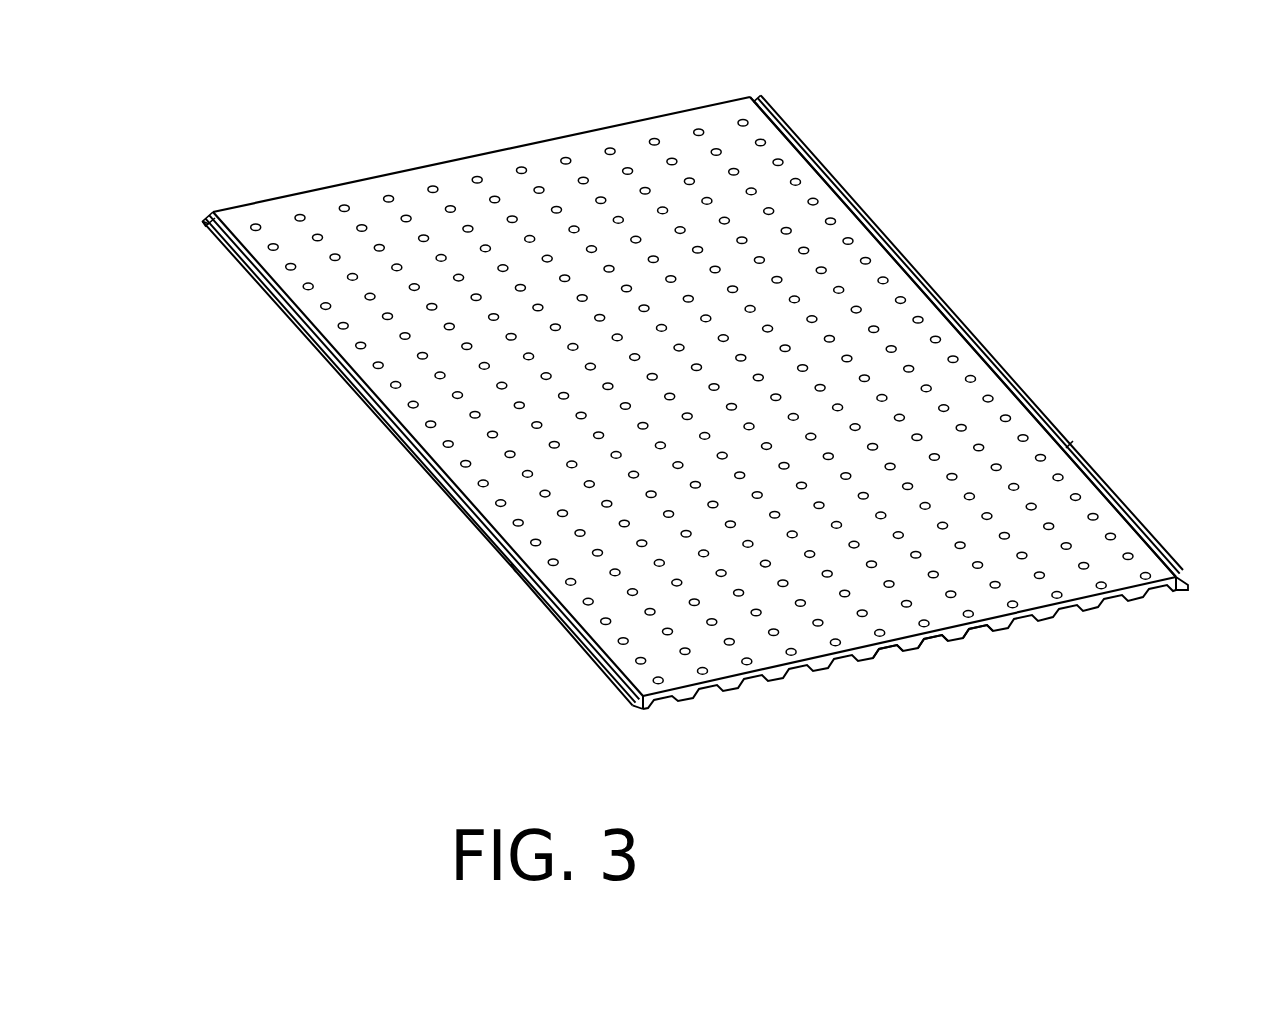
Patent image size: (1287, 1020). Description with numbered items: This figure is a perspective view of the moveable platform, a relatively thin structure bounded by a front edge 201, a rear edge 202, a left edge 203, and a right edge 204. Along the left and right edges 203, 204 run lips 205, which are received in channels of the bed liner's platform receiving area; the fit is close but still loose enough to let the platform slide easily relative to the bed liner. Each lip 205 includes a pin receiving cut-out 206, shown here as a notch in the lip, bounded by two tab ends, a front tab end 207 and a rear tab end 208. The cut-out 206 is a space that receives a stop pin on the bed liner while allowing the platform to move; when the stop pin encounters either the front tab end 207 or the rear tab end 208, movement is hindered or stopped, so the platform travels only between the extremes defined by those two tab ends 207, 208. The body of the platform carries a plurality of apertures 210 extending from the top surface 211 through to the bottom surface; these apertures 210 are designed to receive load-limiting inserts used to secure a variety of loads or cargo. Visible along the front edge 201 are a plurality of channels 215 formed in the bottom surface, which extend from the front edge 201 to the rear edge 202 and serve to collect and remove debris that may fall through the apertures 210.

The front edge 201 is at (998, 621).
The rear edge 202 is at (513, 147).
The left edge 203 is at (413, 461).
The right edge 204 is at (985, 355).
The lip 205 is at (607, 667).
The pin receiving cut-out 206 is at (513, 568).
The front tab end 207 is at (555, 618).
The rear tab end 208 is at (210, 230).
The apertures 210 is at (791, 230).
The top surface 211 is at (363, 193).
The channels 215 is at (978, 629).